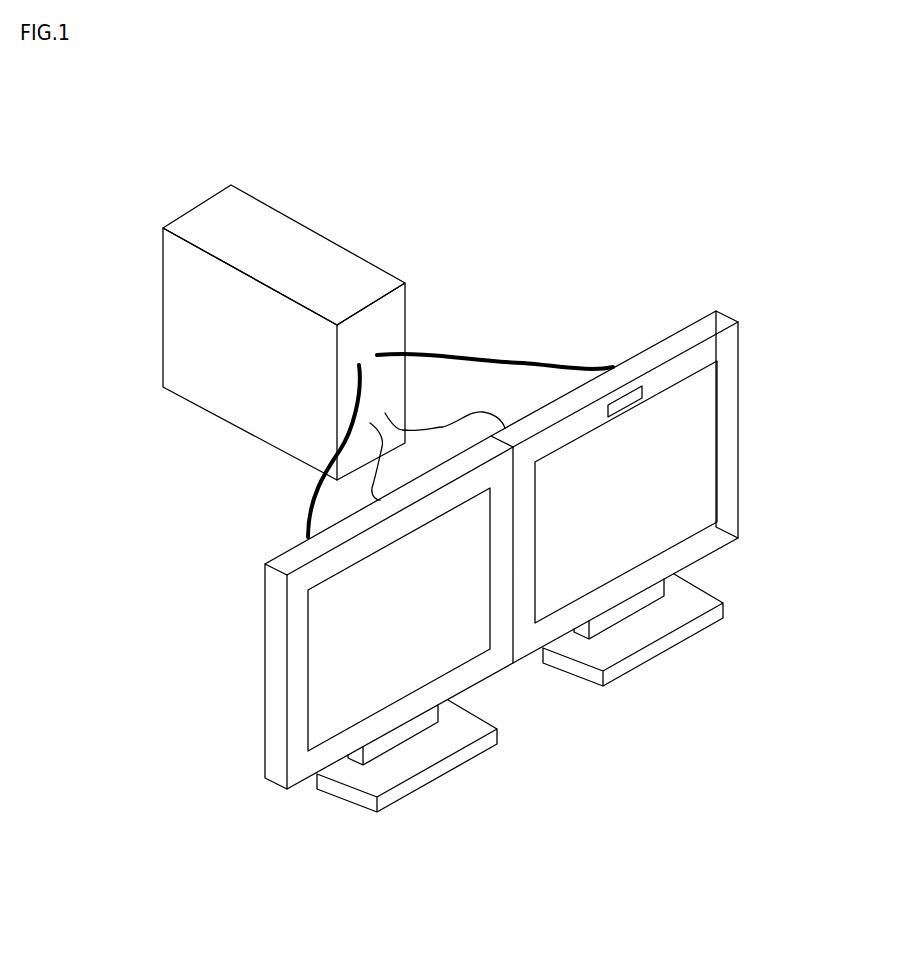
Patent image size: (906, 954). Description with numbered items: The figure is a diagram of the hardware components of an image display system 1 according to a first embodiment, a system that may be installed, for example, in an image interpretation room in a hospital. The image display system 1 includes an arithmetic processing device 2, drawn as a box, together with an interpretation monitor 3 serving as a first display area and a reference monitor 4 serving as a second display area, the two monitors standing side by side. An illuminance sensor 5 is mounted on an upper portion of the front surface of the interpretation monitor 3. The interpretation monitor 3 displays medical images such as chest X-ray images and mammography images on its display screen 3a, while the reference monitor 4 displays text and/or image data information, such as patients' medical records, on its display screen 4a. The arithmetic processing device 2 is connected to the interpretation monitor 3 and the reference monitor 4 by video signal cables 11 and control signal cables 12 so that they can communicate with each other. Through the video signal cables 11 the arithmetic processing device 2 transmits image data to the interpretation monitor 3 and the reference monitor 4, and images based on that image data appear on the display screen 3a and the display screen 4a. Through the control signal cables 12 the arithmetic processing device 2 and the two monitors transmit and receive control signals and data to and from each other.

The image display system 1 is at (778, 105).
The arithmetic processing device 2 is at (260, 218).
The interpretation monitor 3 is at (647, 498).
The display screen of the interpretation monitor 3a is at (695, 460).
The reference monitor 4 is at (356, 624).
The display screen of the reference monitor 4a is at (327, 682).
The illuminance sensor 5 is at (628, 402).
The video signal cables 11 is at (462, 352).
The control signal cables 12 is at (443, 427).